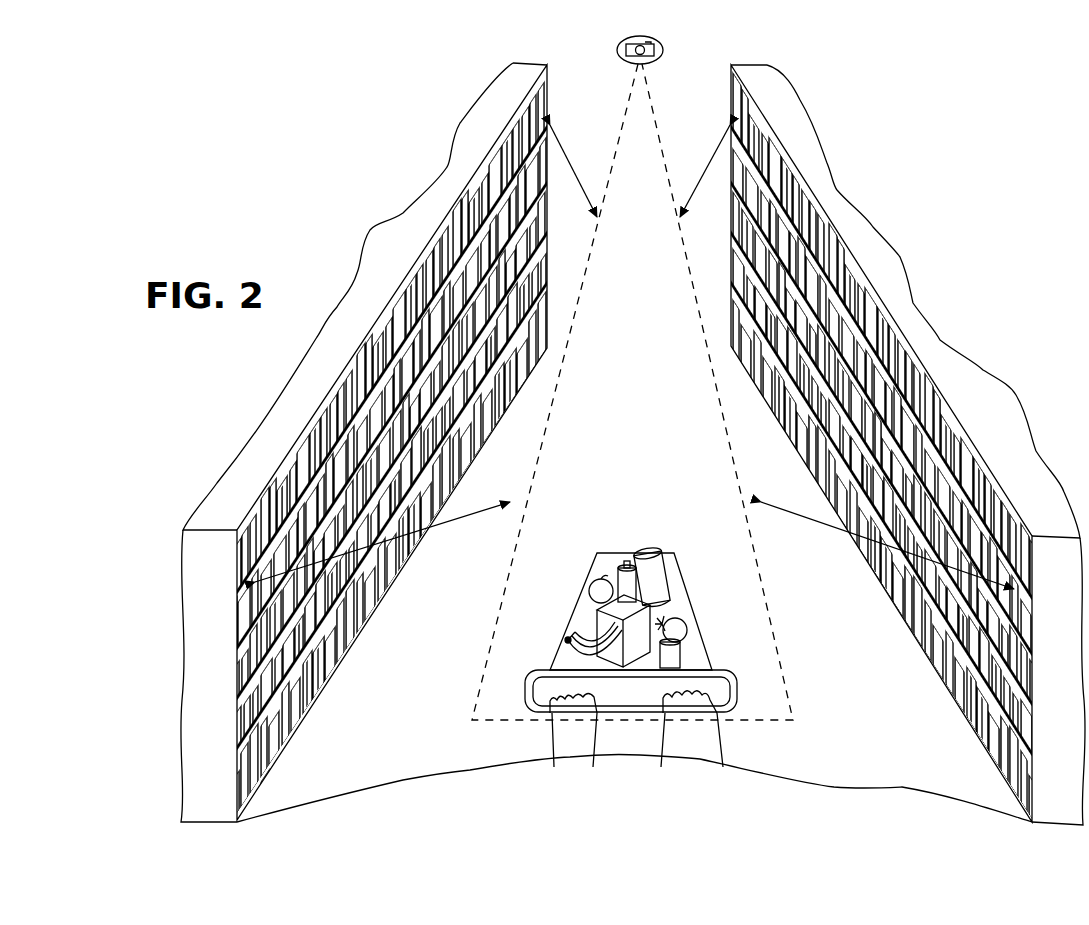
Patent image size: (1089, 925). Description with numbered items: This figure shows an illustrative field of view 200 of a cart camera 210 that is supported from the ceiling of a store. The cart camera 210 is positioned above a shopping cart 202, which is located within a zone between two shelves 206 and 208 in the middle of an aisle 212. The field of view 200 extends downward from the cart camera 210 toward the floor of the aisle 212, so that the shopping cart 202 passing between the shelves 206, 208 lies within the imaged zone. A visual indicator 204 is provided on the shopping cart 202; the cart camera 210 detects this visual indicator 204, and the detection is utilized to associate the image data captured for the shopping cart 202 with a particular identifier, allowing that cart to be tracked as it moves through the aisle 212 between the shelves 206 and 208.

The field of view 200 is at (838, 806).
The shopping cart 202 is at (660, 548).
The visual indicator 204 is at (537, 668).
The shelf 206 is at (416, 258).
The shelf 208 is at (1006, 419).
The cart camera 210 is at (621, 50).
The aisle 212 is at (413, 728).